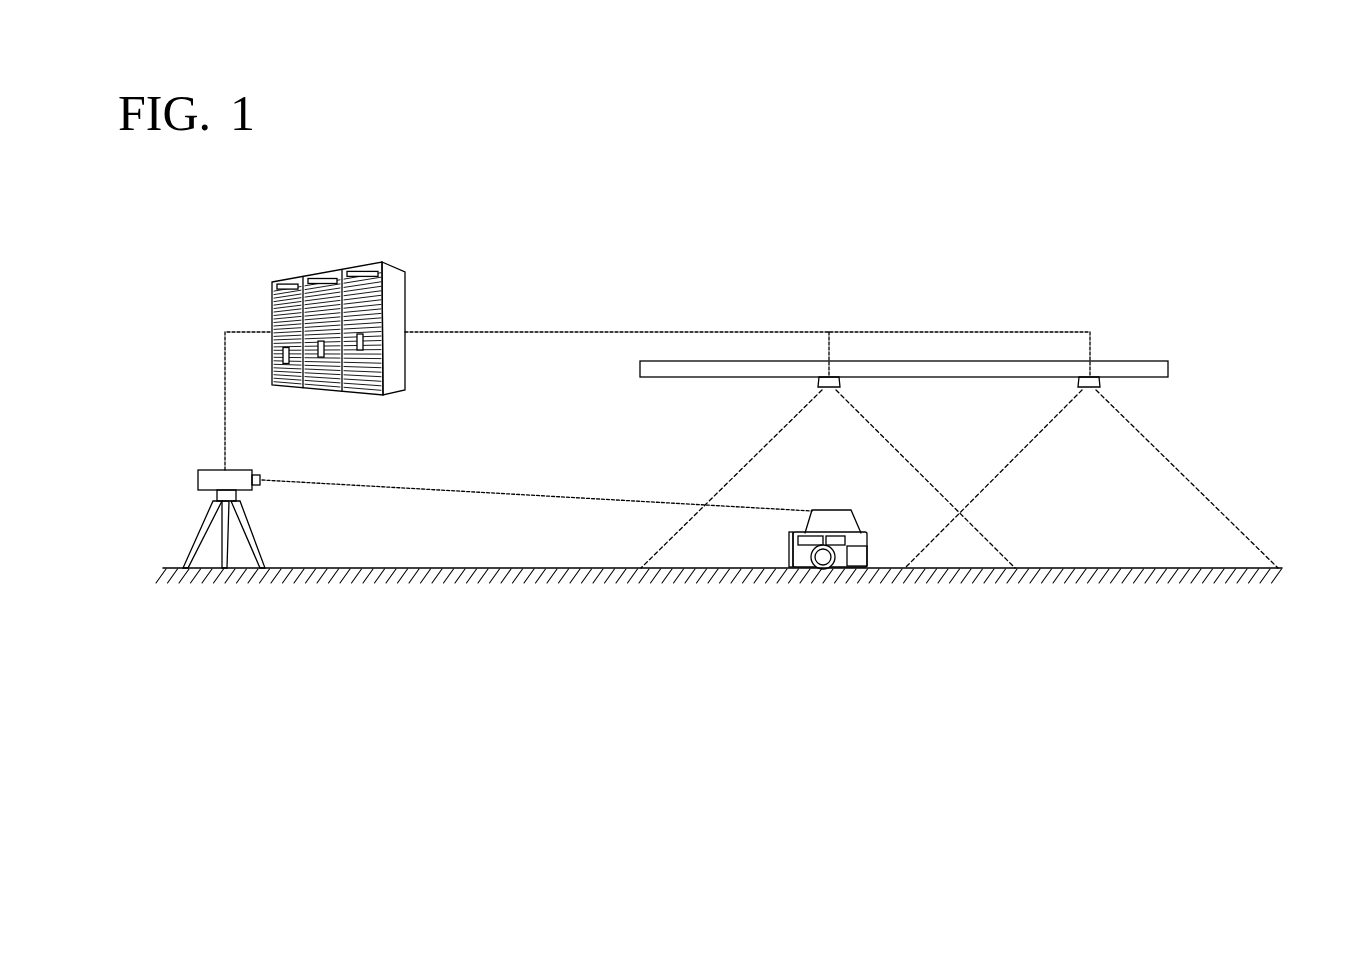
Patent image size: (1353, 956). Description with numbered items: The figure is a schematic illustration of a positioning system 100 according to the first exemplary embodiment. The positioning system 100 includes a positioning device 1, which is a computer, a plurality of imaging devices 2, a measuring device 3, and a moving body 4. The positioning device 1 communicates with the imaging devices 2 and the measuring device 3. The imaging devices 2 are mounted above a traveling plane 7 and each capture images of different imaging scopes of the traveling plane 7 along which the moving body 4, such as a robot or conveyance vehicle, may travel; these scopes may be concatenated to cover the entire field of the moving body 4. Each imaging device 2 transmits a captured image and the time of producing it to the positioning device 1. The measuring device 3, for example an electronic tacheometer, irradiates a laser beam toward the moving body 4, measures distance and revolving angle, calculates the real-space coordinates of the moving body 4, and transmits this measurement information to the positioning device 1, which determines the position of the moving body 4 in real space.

The positioning system 100 is at (760, 232).
The positioning device 1 is at (321, 280).
The imaging device 2 is at (834, 380).
The measuring device 3 is at (198, 479).
The moving body 4 is at (846, 560).
The traveling plane 7 is at (473, 578).